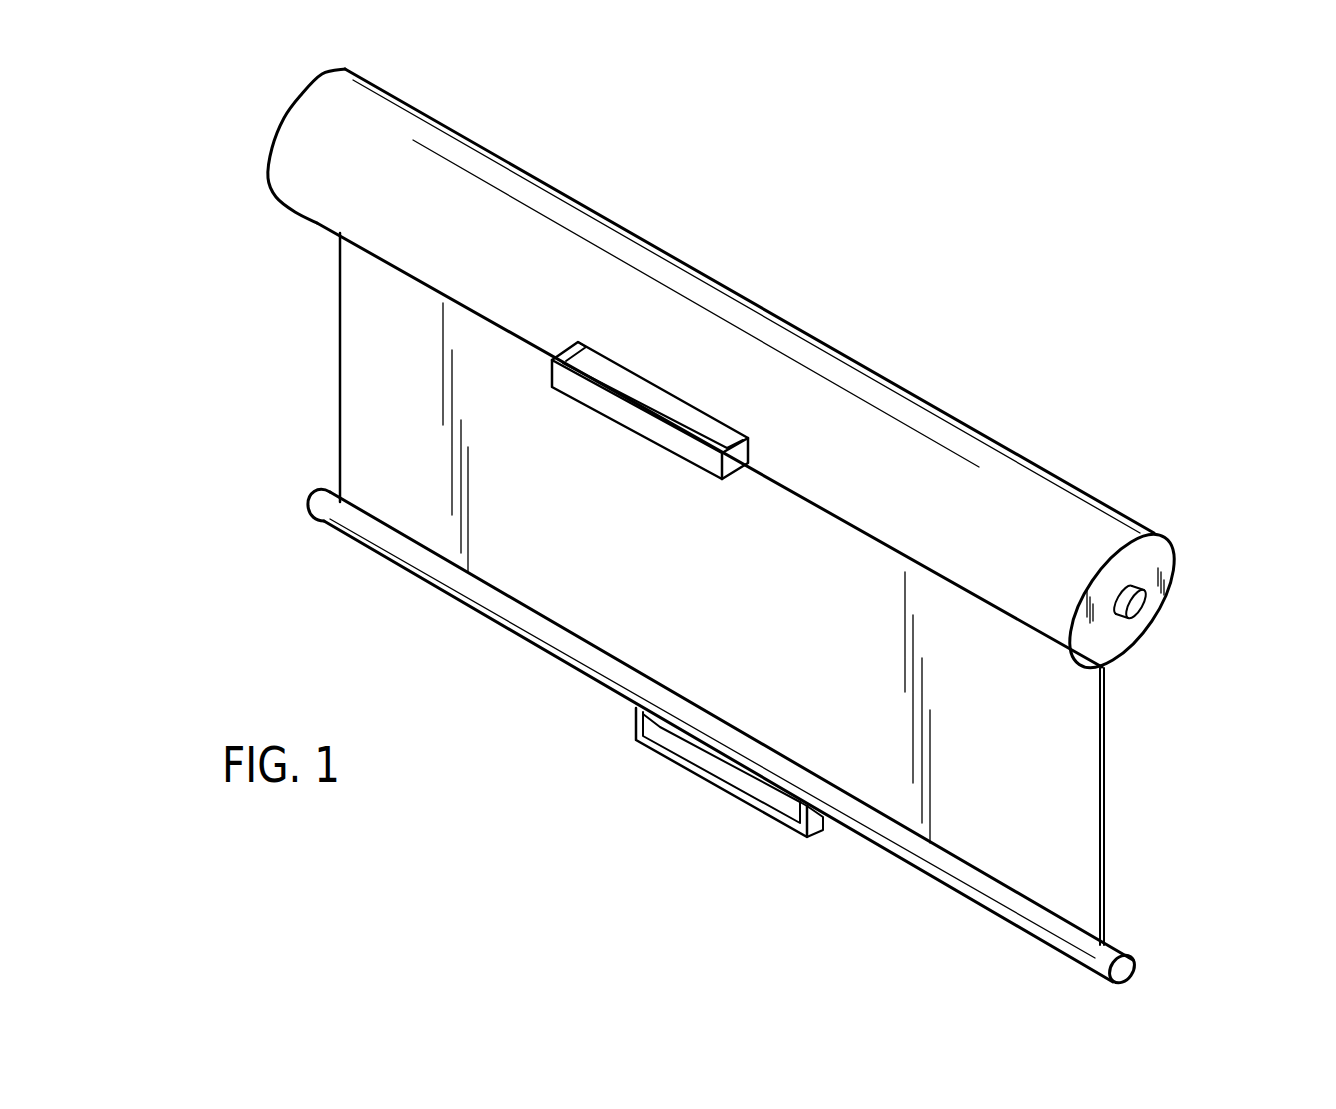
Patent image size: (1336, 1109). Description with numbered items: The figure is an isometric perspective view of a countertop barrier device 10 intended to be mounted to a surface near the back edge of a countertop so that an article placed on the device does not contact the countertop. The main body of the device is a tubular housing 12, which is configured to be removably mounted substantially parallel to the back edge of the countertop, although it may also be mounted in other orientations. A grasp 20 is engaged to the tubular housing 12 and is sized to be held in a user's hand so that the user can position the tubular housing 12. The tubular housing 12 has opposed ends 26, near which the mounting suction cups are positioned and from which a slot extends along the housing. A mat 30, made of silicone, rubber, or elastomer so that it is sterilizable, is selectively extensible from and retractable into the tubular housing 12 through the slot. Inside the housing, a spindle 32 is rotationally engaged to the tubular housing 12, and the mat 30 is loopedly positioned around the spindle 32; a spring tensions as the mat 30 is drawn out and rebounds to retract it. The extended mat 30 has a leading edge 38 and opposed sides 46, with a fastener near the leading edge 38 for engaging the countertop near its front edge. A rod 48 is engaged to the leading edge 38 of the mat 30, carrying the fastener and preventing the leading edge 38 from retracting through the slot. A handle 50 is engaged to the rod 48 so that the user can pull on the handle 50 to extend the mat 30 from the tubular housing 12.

The countertop barrier device 10 is at (932, 180).
The tubular housing 12 is at (320, 195).
The grasp 20 is at (553, 383).
The opposed ends 26 is at (300, 112).
The mat 30 is at (510, 515).
The spindle 32 is at (1154, 605).
The leading edge 38 is at (975, 859).
The opposed sides 46 is at (355, 470).
The rod 48 is at (500, 624).
The handle 50 is at (715, 805).